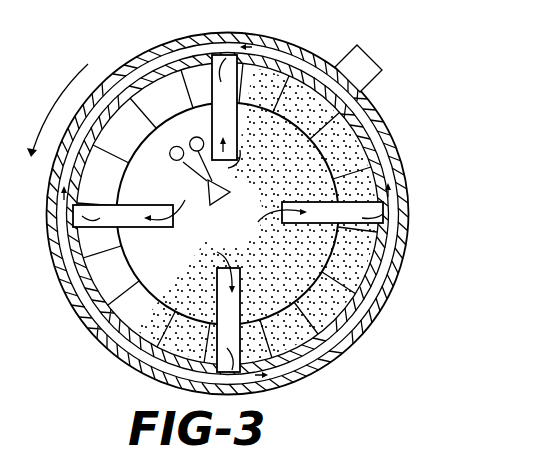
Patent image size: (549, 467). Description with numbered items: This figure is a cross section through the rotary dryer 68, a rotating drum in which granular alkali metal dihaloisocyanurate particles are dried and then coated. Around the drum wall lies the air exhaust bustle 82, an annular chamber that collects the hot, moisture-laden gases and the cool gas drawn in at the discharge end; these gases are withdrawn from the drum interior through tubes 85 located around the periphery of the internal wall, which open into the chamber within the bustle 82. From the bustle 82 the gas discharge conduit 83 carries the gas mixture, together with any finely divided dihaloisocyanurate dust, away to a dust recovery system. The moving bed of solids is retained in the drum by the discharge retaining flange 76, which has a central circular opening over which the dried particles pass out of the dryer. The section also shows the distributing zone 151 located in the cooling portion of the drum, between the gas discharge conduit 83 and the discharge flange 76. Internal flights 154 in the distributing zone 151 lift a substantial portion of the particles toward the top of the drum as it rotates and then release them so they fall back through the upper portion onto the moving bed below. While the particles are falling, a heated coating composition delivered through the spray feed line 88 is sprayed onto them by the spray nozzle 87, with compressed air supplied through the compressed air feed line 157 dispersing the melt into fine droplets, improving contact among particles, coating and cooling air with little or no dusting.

The rotary dryer 68 is at (343, 353).
The air exhaust bustle 82 is at (168, 43).
The discharge retaining flange 76 is at (297, 62).
The gas discharge conduit 83 is at (370, 62).
The distributing zone 151 is at (310, 157).
The internal flights 154 is at (138, 98).
The tubes 85 is at (236, 143).
The spray feed line 88 is at (170, 156).
The compressed air feed line 157 is at (184, 164).
The spray nozzle 87 is at (224, 203).